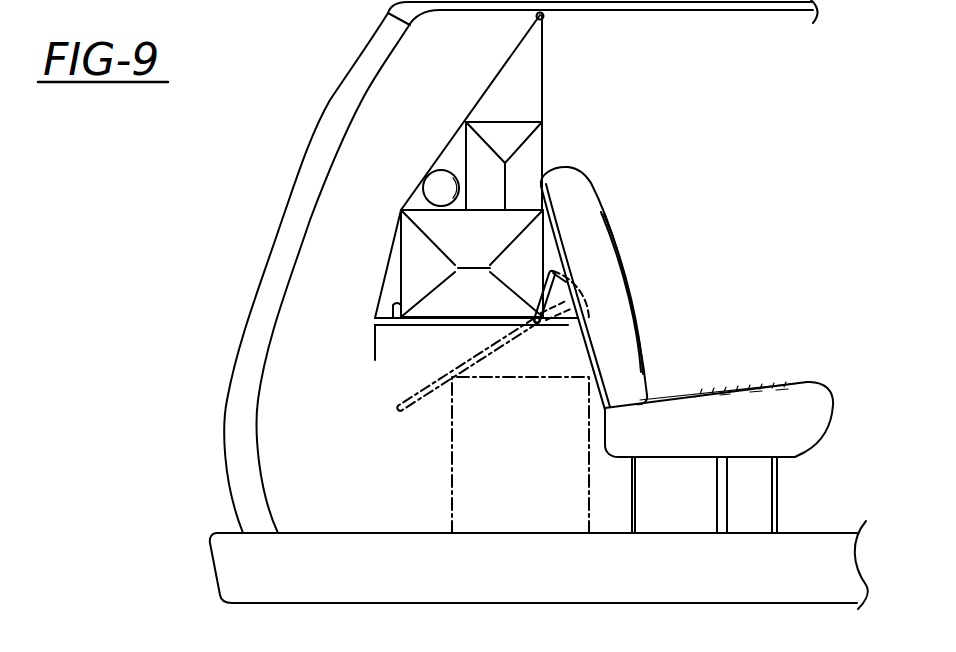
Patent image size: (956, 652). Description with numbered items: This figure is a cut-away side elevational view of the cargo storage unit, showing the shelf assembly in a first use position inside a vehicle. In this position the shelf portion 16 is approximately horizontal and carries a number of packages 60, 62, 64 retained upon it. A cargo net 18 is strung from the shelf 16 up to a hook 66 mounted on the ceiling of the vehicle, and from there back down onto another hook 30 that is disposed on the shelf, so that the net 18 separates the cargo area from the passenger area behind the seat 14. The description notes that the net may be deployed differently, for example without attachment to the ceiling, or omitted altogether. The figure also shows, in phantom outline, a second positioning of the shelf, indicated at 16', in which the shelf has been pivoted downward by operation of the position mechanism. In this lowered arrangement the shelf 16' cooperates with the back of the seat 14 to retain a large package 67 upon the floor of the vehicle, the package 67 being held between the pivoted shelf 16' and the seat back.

The seat 14 is at (622, 330).
The shelf portion 16 is at (492, 324).
The shelf in second position 16' is at (429, 410).
The cargo net 18 is at (542, 78).
The hook 30 is at (375, 322).
The package 60 is at (413, 273).
The package 62 is at (438, 181).
The package 64 is at (530, 152).
The hook 66 is at (546, 17).
The large package 67 is at (540, 448).